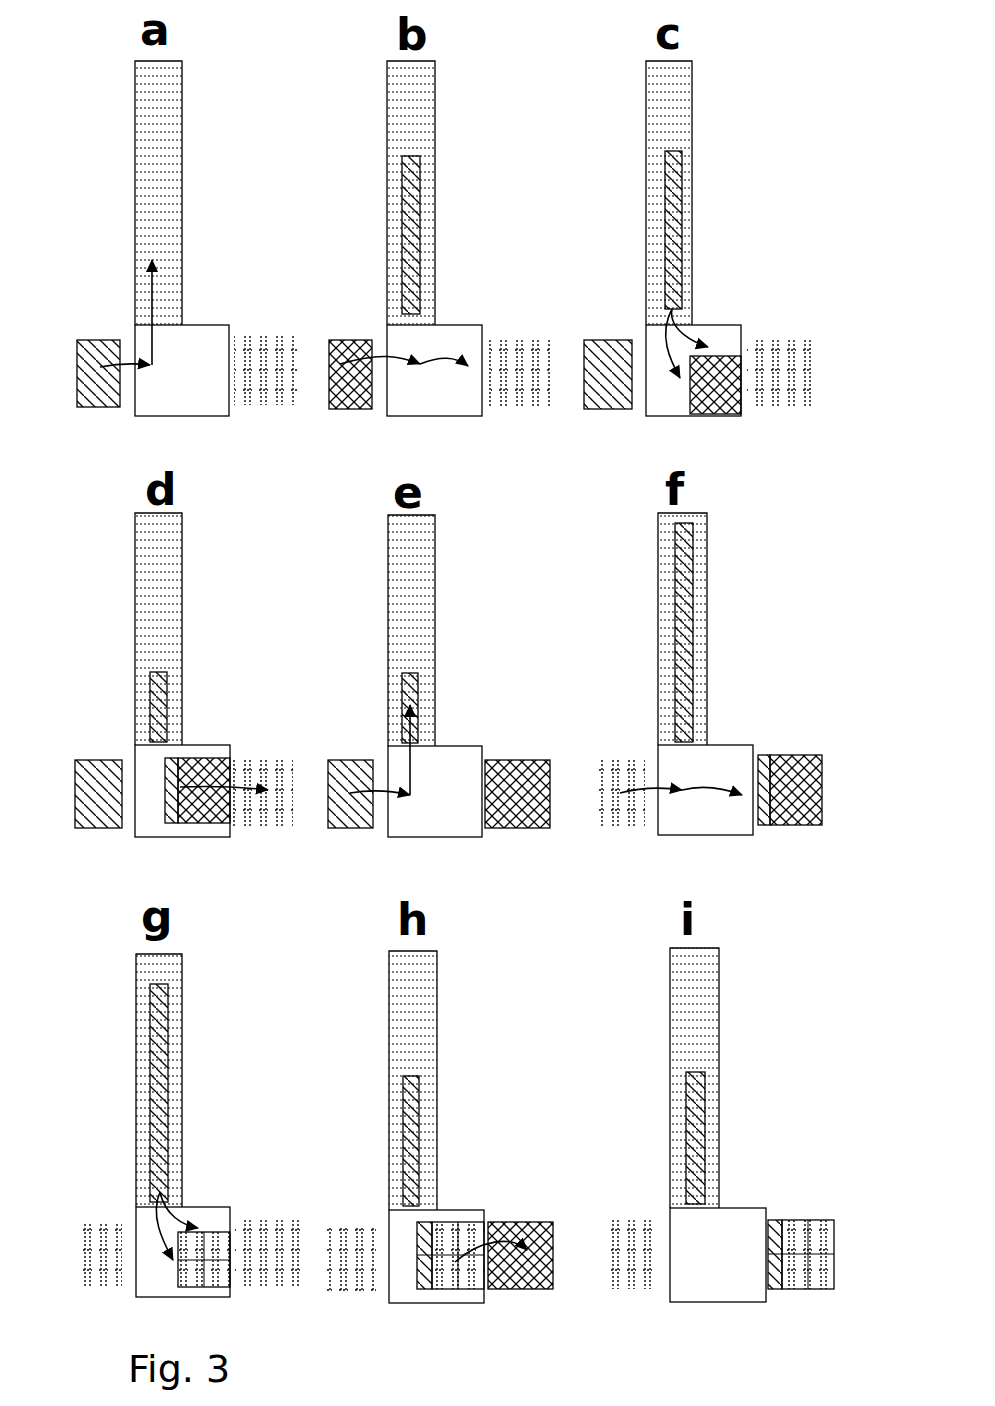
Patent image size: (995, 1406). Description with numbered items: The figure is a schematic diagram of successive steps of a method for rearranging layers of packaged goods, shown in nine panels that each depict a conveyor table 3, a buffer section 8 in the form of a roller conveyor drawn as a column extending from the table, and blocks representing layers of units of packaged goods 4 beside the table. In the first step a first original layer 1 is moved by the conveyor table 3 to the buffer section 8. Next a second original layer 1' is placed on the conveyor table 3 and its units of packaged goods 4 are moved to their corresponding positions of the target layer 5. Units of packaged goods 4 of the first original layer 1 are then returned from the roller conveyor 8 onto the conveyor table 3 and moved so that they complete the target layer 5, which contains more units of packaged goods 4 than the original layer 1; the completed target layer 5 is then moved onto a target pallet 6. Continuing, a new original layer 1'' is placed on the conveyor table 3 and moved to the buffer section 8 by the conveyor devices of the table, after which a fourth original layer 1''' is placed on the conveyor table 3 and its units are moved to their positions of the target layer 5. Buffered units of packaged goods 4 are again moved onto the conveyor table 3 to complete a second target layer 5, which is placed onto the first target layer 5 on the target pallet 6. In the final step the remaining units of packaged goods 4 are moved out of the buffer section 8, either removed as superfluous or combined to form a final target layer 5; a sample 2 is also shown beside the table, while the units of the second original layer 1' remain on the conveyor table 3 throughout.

The first original layer 1 is at (98, 342).
The second original layer 1' is at (350, 339).
The new original layer 1'' is at (350, 759).
The fourth original layer 1''' is at (622, 758).
The sample 2 is at (82, 1223).
The conveyor table 3 is at (198, 325).
The units of packaged goods 4 is at (100, 407).
The target layer 5 is at (208, 823).
The target pallet 6 is at (262, 828).
The buffer section 8 is at (182, 113).